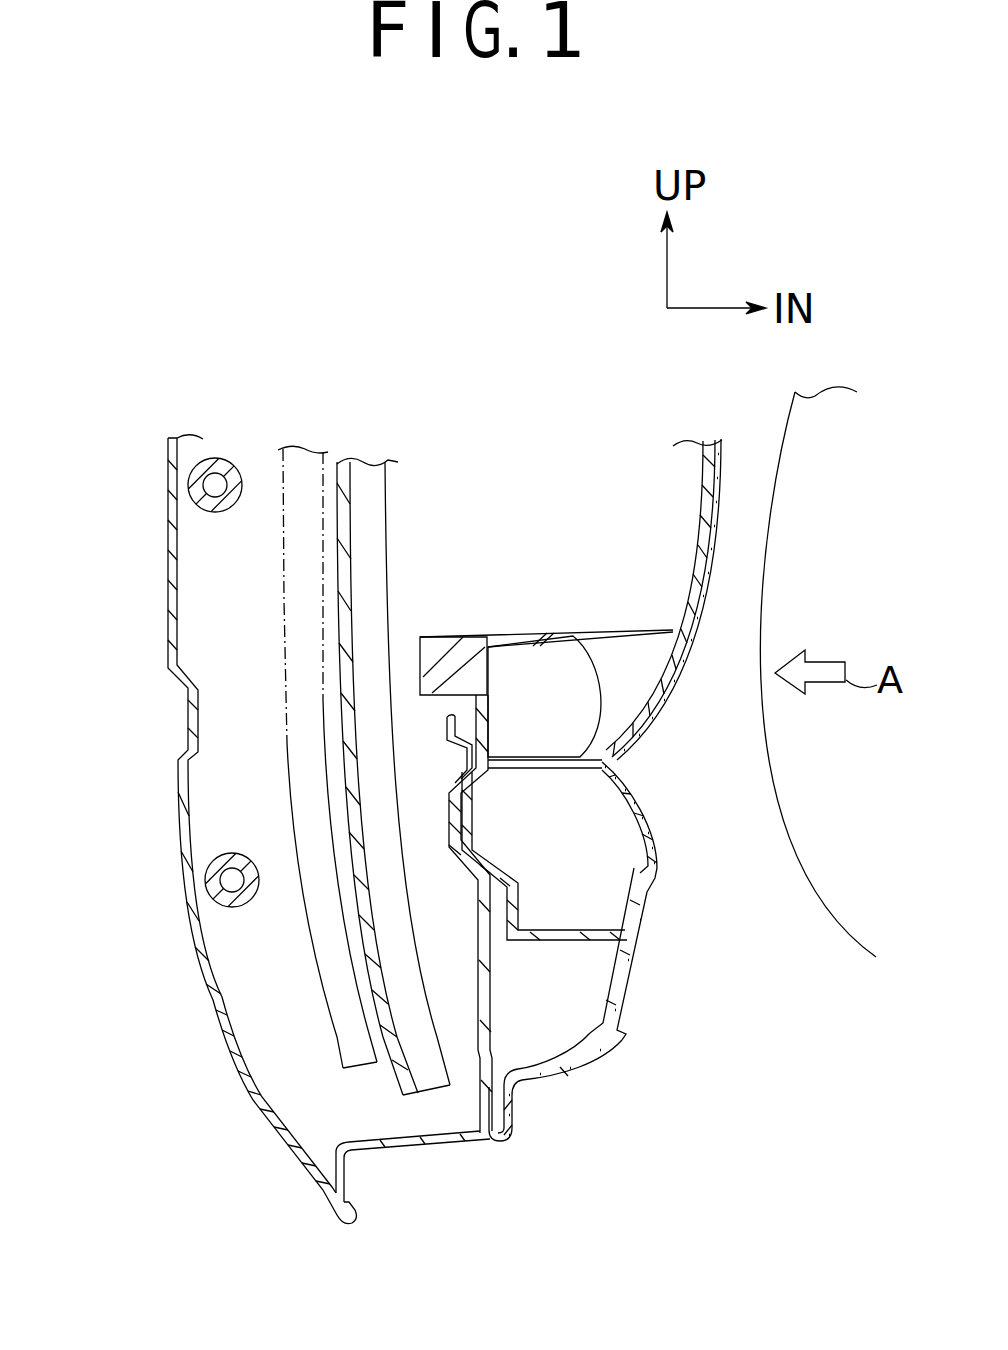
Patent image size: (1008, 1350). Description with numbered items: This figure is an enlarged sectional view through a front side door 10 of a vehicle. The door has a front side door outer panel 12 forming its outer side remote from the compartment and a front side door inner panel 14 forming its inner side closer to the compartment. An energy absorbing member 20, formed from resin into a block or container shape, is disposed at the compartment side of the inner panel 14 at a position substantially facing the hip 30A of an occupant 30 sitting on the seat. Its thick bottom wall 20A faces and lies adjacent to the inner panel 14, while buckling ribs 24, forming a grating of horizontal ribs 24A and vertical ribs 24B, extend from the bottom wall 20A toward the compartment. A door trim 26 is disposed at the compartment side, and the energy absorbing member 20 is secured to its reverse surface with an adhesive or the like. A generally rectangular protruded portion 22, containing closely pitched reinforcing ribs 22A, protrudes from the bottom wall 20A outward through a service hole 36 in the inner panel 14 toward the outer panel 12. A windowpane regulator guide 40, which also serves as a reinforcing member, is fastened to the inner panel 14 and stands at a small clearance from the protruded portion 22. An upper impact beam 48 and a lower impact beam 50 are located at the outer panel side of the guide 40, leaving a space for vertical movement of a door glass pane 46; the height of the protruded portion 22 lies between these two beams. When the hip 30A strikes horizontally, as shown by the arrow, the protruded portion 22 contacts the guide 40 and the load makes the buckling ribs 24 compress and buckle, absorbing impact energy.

The front side door 10 is at (153, 463).
The front side door outer panel 12 is at (183, 845).
The front side door inner panel 14 is at (445, 838).
The energy absorbing member 20 is at (528, 634).
The bottom wall 20A is at (473, 812).
The protruded portion 22 is at (450, 645).
The reinforcing ribs 22A is at (478, 677).
The buckling ribs 24 is at (693, 545).
The horizontal ribs 24A is at (540, 636).
The vertical ribs 24B is at (638, 662).
The door trim 26 is at (672, 608).
The occupant 30 is at (777, 440).
The hip 30A is at (760, 535).
The service hole 36 is at (446, 716).
The windowpane regulator guide 40 is at (387, 520).
The door glass pane 46 is at (287, 743).
The upper impact beam 48 is at (222, 512).
The lower impact beam 50 is at (232, 907).